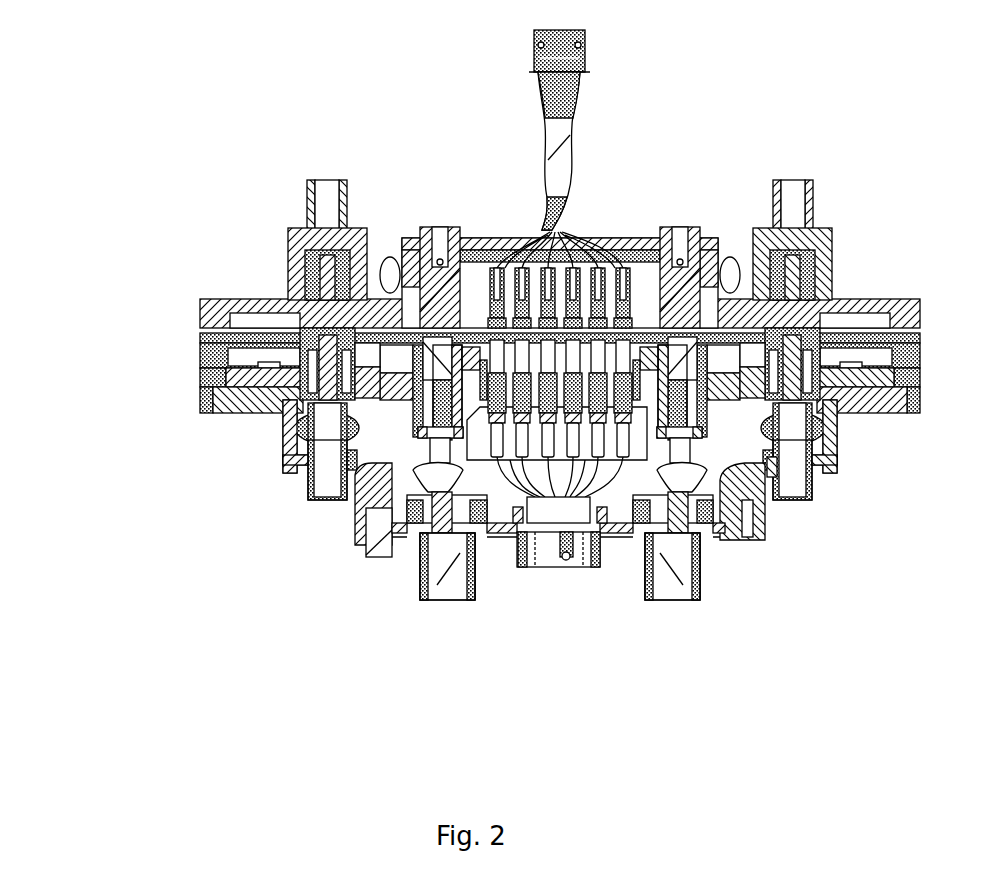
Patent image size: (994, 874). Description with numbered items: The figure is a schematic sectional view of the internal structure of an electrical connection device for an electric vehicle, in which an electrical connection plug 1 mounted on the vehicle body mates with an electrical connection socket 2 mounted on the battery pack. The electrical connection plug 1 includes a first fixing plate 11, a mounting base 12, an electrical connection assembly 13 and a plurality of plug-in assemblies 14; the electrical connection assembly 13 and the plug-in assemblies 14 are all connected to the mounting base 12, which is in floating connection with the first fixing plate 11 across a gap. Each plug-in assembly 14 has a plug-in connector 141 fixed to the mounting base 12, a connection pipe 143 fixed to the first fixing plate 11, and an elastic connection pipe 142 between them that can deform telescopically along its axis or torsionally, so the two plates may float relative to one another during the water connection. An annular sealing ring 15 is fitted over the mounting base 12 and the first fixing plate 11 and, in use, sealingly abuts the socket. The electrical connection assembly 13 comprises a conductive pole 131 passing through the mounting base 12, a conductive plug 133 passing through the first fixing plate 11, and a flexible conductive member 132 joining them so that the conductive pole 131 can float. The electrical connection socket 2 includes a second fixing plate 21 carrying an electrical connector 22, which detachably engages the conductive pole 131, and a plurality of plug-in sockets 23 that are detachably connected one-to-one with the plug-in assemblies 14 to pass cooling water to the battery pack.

The electrical connection plug 1 is at (472, 548).
The first fixing plate 11 is at (213, 413).
The mounting base 12 is at (235, 372).
The electrical connection assembly 13 is at (519, 549).
The conductive pole 131 is at (443, 383).
The flexible conductive member 132 is at (417, 478).
The conductive plug 133 is at (545, 619).
The plug-in assembly 14 is at (517, 535).
The plug-in connector 141 is at (292, 398).
The elastic connection pipe 142 is at (280, 512).
The connection pipe 143 is at (312, 490).
The annular sealing ring 15 is at (230, 400).
The electrical connection socket 2 is at (504, 215).
The second fixing plate 21 is at (255, 297).
The electrical connector 22 is at (437, 317).
The plug-in socket 23 is at (330, 293).